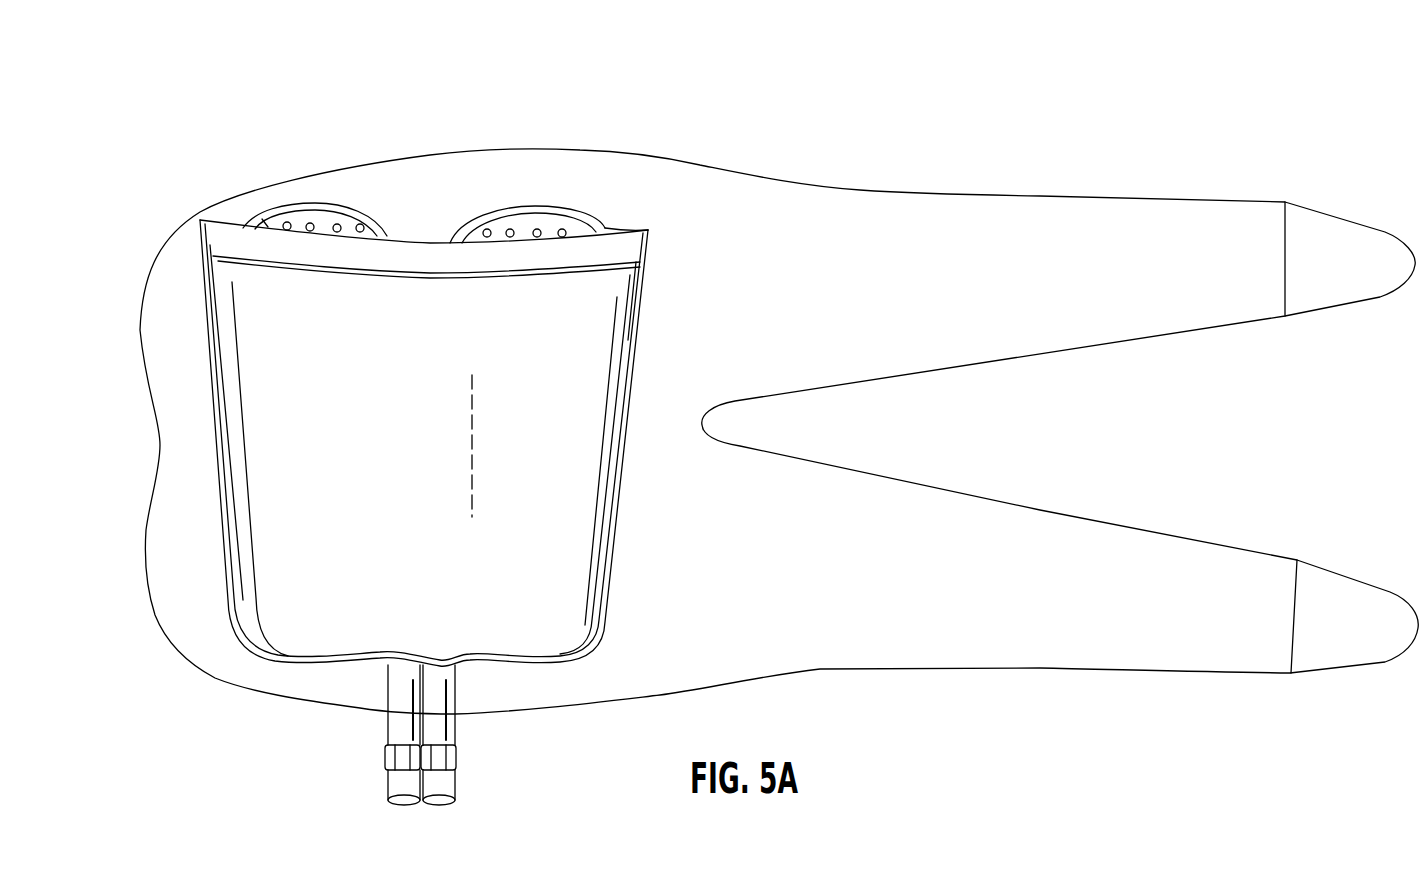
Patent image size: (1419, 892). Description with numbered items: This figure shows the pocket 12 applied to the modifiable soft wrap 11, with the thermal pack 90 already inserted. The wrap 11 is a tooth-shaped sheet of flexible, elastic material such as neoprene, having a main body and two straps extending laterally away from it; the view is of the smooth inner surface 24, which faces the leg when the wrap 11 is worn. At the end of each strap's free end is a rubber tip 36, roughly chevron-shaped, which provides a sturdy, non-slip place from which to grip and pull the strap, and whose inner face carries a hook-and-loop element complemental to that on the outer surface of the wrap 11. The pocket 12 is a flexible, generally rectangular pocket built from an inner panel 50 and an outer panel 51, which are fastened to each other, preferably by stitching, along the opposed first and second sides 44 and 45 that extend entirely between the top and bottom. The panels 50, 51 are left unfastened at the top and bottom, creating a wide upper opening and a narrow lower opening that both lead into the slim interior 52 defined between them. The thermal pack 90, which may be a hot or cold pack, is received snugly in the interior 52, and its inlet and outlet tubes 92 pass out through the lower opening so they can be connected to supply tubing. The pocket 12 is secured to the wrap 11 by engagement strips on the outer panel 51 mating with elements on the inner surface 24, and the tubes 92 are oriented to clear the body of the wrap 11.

The modifiable soft wrap 11 is at (110, 742).
The pocket 12 is at (252, 612).
The inner surface 24 is at (835, 294).
The rubber tip 36 is at (1373, 236).
The first side 44 is at (222, 420).
The second side 45 is at (627, 433).
The inner panel 50 is at (615, 322).
The outer panel 51 is at (600, 222).
The interior 52 is at (432, 235).
The thermal pack 90 is at (548, 212).
The inlet and outlet tubes 92 is at (392, 732).